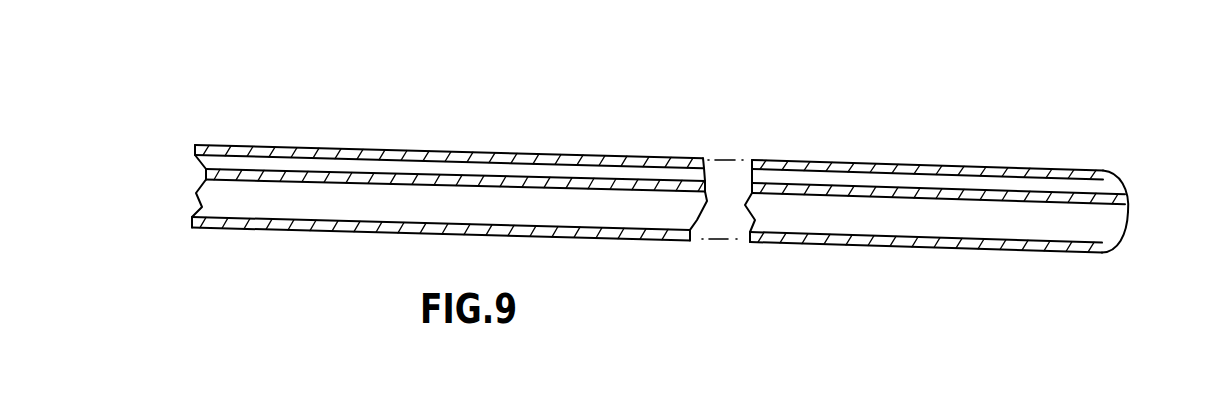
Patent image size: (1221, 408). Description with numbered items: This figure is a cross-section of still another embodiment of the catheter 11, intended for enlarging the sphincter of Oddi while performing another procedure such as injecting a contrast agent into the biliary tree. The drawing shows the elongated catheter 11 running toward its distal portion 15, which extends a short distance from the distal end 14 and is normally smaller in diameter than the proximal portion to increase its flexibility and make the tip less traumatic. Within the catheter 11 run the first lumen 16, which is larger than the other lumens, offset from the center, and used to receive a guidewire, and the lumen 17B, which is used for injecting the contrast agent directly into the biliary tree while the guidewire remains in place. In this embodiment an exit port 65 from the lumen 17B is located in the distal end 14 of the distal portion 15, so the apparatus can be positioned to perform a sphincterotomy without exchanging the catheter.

The catheter 11 is at (390, 151).
The lumen 17B is at (446, 167).
The first lumen 16 is at (293, 207).
The distal portion 15 is at (961, 168).
The distal end 14 is at (1119, 170).
The exit port 65 is at (1129, 216).